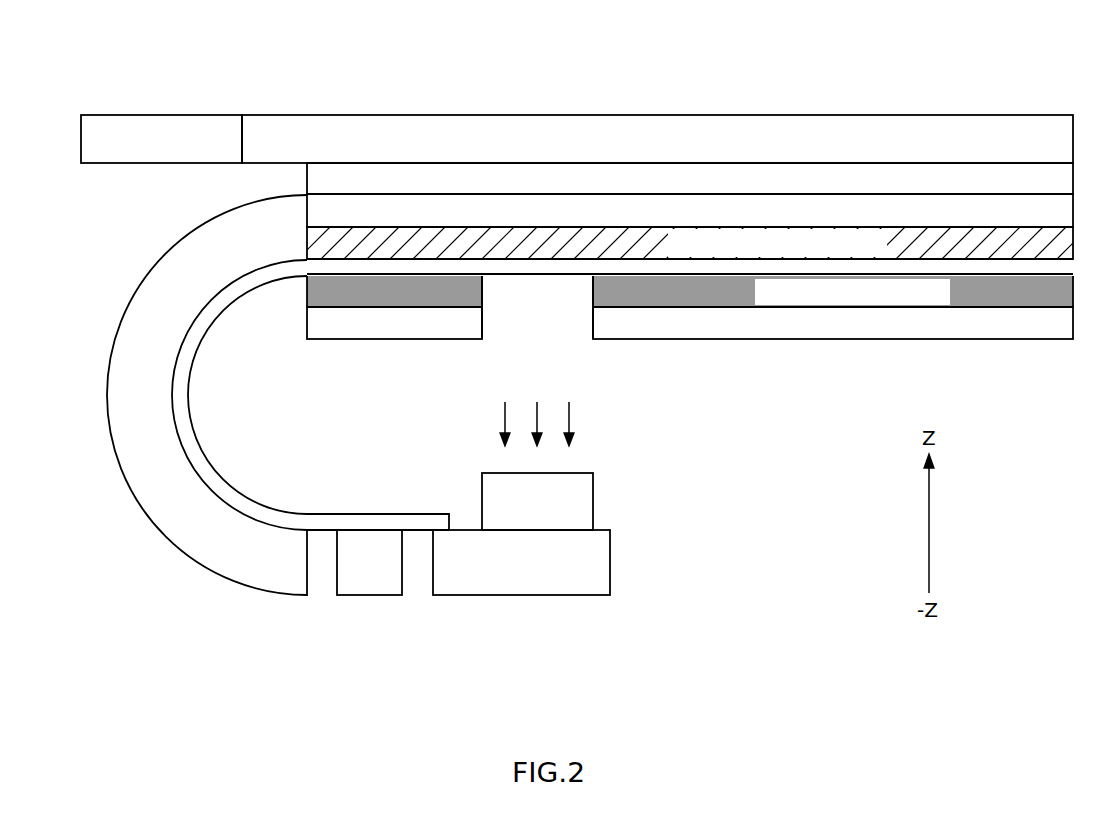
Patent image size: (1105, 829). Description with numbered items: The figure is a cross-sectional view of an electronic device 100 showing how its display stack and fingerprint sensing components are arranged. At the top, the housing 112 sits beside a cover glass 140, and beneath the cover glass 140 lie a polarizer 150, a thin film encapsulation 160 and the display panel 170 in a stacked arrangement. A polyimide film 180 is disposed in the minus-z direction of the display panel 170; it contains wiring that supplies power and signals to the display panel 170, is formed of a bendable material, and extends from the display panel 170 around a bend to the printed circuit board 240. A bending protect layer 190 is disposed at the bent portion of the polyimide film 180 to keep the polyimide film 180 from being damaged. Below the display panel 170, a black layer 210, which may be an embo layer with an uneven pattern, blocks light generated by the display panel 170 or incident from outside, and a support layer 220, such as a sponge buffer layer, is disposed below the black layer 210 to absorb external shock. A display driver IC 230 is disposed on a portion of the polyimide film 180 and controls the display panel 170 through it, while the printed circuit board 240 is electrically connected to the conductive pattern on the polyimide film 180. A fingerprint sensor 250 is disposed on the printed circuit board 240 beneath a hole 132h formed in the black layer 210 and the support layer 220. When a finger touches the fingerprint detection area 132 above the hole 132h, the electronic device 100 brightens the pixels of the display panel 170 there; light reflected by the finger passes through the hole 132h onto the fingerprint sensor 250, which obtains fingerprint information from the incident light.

The electronic device 100 is at (815, 72).
The housing 112 is at (161, 139).
The fingerprint detection area 132 is at (593, 110).
The hole 132h is at (538, 322).
The cover glass 140 is at (657, 139).
The polarizer 150 is at (690, 178).
The thin film encapsulation 160 is at (690, 210).
The display panel 170 is at (682, 243).
The polyimide film 180 is at (392, 512).
The bending protect layer 190 is at (207, 395).
The black layer 210 is at (690, 291).
The support layer 220 is at (690, 323).
The display driver IC 230 is at (369, 562).
The printed circuit board 240 is at (521, 562).
The fingerprint sensor 250 is at (593, 512).